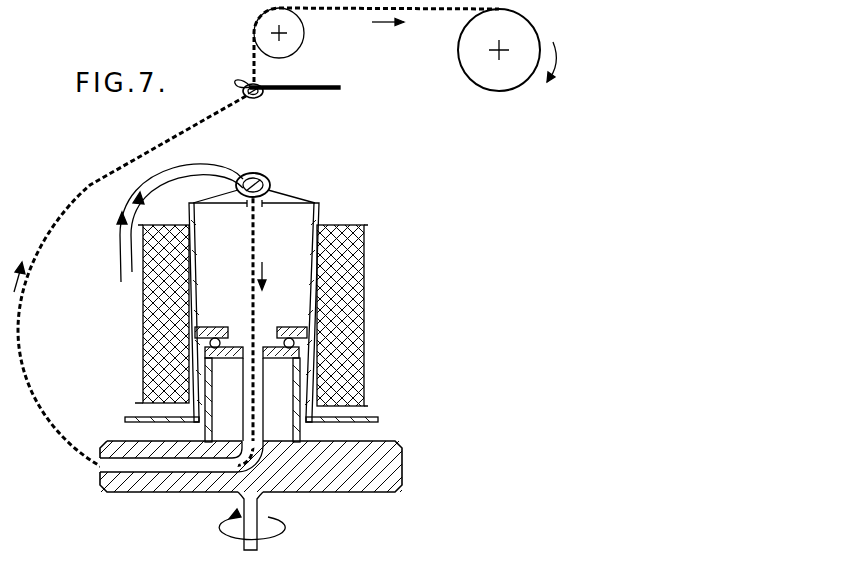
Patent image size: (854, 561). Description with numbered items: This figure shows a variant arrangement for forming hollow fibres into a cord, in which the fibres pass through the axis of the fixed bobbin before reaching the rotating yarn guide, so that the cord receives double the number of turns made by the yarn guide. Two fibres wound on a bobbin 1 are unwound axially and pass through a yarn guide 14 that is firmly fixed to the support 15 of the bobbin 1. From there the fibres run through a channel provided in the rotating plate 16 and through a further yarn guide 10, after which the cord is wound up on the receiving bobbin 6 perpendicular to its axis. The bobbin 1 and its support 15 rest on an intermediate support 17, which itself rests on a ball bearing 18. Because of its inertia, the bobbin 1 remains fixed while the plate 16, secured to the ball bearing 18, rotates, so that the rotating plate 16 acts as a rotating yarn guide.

The bobbin 1 is at (368, 278).
The receiving bobbin 6 is at (483, 60).
The yarn guide 10 is at (308, 93).
The yarn guide 14 is at (270, 185).
The support 15 is at (322, 212).
The rotating plate 16 is at (368, 467).
The intermediate support 17 is at (375, 415).
The ball bearing 18 is at (305, 331).